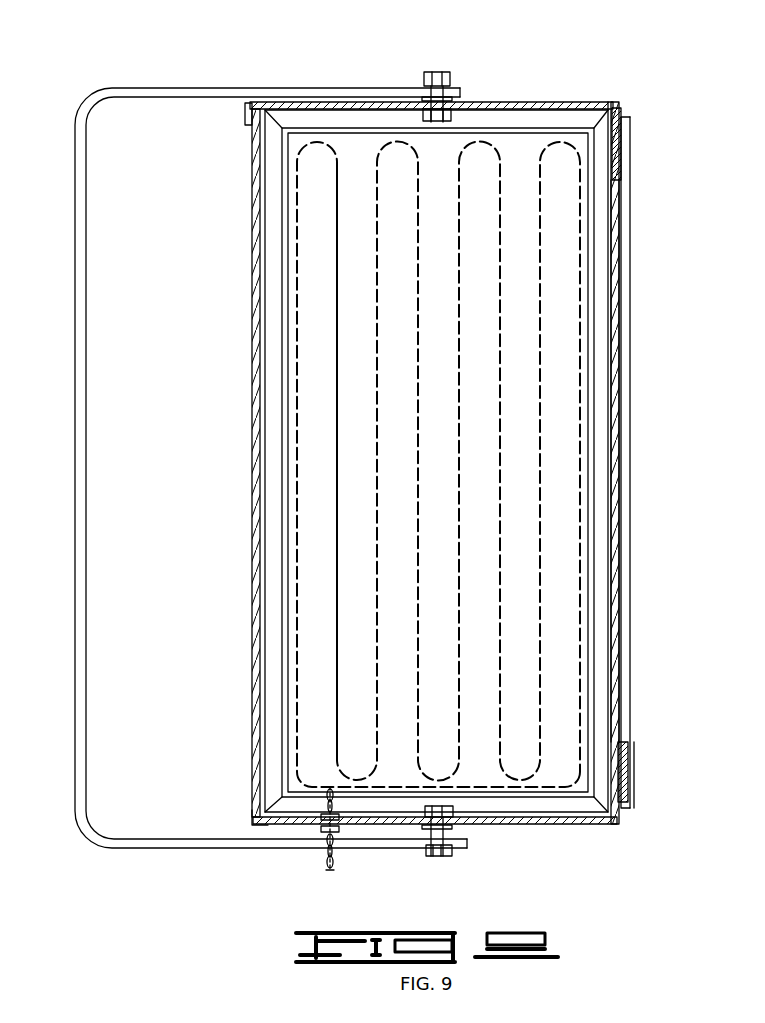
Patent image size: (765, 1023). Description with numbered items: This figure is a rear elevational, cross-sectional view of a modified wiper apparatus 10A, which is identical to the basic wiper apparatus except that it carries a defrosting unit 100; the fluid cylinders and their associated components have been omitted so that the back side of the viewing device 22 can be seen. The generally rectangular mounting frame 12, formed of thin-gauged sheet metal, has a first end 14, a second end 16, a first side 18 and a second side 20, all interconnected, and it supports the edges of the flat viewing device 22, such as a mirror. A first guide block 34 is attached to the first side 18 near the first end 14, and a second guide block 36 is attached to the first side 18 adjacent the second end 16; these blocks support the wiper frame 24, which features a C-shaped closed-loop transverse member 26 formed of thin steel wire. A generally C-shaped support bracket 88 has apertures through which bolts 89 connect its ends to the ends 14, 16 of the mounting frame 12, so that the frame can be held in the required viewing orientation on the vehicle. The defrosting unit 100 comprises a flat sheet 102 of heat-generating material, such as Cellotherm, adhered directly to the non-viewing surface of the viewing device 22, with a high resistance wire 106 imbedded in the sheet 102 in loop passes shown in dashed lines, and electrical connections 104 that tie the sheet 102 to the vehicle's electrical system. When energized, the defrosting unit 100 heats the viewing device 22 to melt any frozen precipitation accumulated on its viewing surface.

The wiper apparatus 10A is at (219, 74).
The support bracket 88 is at (74, 168).
The second end 16 is at (508, 101).
The first end 14 is at (545, 826).
The second side 20 is at (256, 520).
The mounting frame 12 is at (575, 96).
The first side 18 is at (620, 507).
The second guide block 36 is at (625, 150).
The first guide block 34 is at (633, 780).
The wiper frame 24 is at (631, 187).
The transverse member 26 is at (633, 247).
The defrosting unit 100 is at (334, 304).
The flat sheet 102 is at (292, 328).
The viewing device 22 is at (555, 379).
The high resistance wire 106 is at (337, 403).
The electrical connections 104 is at (328, 856).
The bolts 89 is at (440, 70).